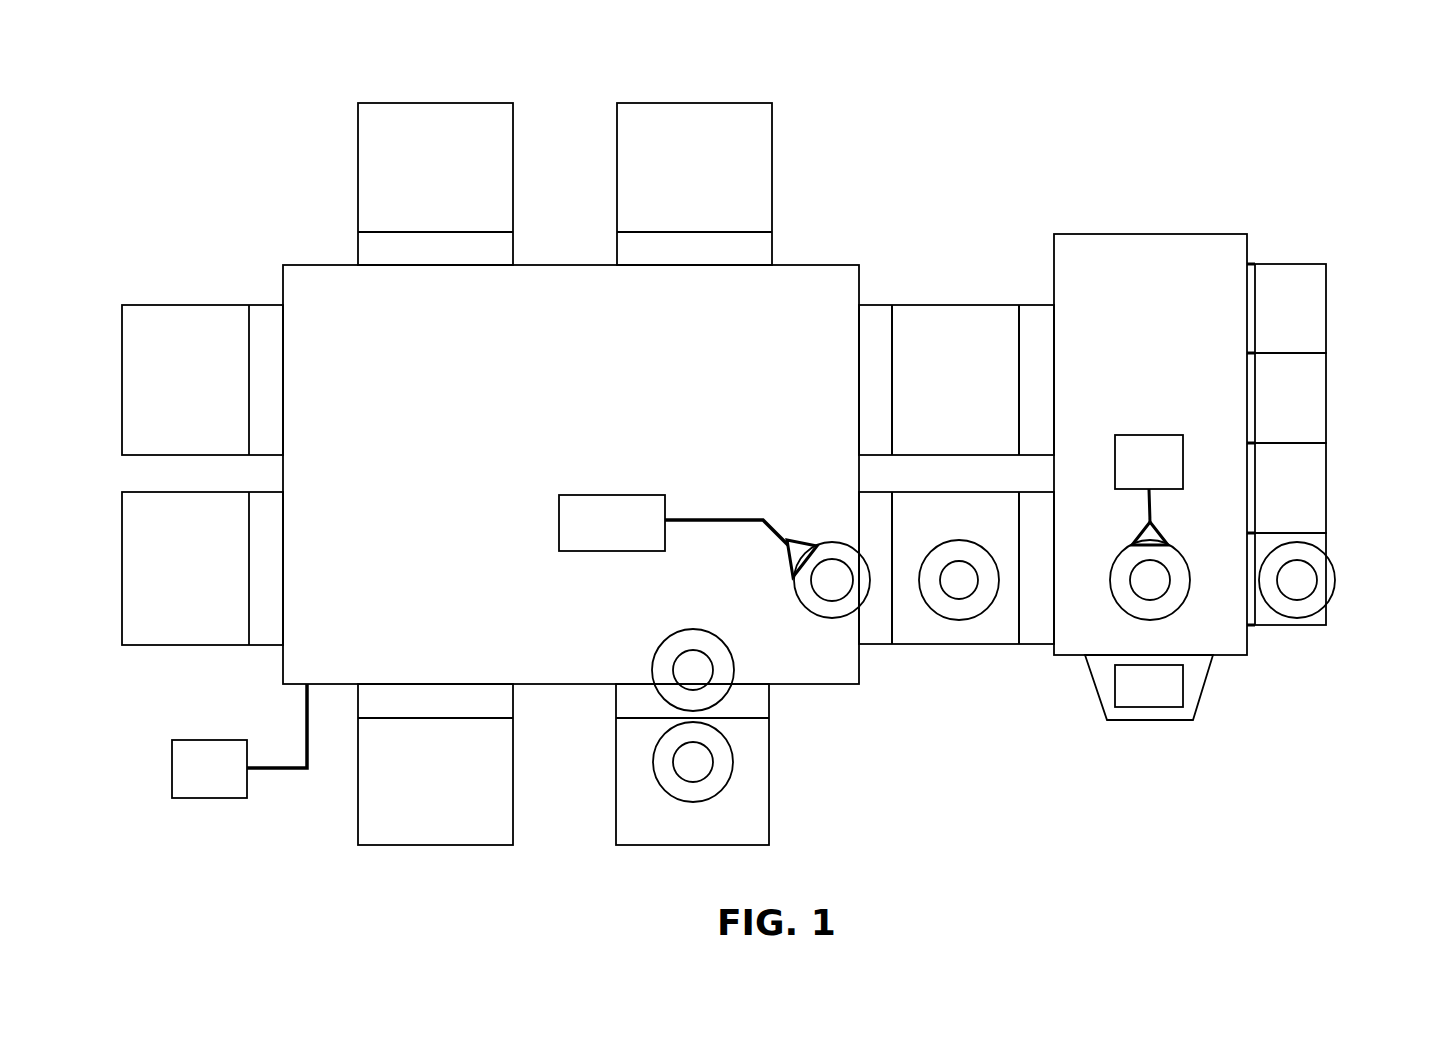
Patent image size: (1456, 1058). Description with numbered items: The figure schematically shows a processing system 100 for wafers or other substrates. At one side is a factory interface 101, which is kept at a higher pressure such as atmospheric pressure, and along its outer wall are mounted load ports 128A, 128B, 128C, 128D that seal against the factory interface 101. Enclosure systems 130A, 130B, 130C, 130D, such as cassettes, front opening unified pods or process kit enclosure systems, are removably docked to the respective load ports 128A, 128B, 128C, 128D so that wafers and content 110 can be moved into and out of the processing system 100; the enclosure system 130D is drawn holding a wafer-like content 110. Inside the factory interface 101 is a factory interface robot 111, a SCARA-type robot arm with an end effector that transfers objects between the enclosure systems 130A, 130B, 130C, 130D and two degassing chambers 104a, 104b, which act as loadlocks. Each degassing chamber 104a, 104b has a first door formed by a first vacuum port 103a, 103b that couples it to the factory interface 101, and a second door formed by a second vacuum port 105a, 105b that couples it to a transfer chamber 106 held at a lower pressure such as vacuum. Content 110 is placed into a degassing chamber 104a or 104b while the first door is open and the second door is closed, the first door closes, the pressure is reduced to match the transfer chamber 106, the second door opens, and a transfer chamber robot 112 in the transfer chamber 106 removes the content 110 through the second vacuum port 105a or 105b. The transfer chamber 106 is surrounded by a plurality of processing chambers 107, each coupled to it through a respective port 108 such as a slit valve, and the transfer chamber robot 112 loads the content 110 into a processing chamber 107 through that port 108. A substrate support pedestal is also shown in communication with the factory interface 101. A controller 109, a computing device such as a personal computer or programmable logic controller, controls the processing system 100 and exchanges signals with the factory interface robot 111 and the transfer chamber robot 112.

The processing system 100 is at (1243, 82).
The factory interface 101 is at (1150, 477).
The first vacuum port 103a is at (1037, 300).
The first vacuum port 103b is at (1037, 630).
The degassing chamber 104a is at (956, 380).
The degassing chamber 104b is at (965, 630).
The second vacuum port 105a is at (877, 300).
The second vacuum port 105b is at (875, 647).
The transfer chamber 106 is at (571, 474).
The processing chamber 107 is at (496, 474).
The port 108 is at (267, 303).
The controller 109 is at (239, 741).
The content 110 is at (1337, 585).
The factory interface robot 111 is at (1149, 490).
The transfer chamber robot 112 is at (688, 536).
The load port 128A is at (1253, 277).
The load port 128B is at (1253, 372).
The load port 128C is at (1253, 458).
The load port 128D is at (1250, 560).
The enclosure system 130A is at (1294, 311).
The enclosure system 130B is at (1294, 406).
The enclosure system 130C is at (1293, 493).
The enclosure system 130D is at (1318, 620).